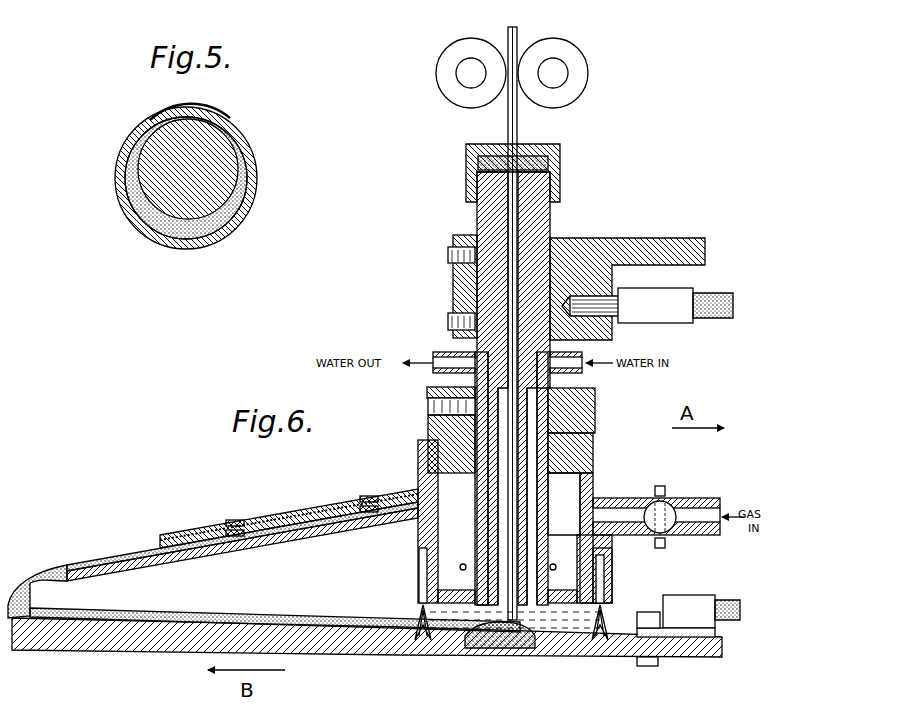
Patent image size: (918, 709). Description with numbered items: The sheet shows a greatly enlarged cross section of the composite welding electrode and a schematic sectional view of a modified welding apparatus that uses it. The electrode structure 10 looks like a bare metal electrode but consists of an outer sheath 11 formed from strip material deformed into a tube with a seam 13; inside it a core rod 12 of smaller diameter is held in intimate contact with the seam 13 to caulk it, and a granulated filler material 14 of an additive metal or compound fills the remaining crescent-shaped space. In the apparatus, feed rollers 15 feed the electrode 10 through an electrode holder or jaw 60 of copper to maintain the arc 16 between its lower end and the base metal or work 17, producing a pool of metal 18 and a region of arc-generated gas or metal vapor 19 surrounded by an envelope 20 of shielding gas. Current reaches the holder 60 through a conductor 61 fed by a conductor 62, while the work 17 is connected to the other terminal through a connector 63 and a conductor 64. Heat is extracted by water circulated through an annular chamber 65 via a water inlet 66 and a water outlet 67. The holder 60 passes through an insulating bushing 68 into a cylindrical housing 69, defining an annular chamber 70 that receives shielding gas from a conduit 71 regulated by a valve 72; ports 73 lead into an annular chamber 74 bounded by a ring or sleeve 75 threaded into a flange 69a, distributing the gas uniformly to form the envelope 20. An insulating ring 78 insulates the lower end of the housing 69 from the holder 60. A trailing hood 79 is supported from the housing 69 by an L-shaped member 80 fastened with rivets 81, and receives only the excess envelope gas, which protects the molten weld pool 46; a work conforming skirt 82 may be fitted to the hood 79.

In FIG. 5, the electrode structure 10 is at (262, 184).
In FIG. 6, the electrode structure 10 is at (518, 128).
In FIG. 5, the outer sheath 11 is at (238, 153).
In FIG. 5, the core rod 12 is at (201, 148).
In FIG. 5, the seam 13 is at (187, 118).
In FIG. 5, the granulated filler material 14 is at (181, 250).
In FIG. 6, the feed rollers 15 is at (440, 72).
In FIG. 6, the arc 16 is at (512, 649).
In FIG. 6, the base metal or work 17 is at (400, 650).
In FIG. 6, the pool of metal 18 is at (492, 650).
In FIG. 6, the arc-generated gas or metal vapor 19 is at (462, 622).
In FIG. 6, the envelope of shielding gas 20 is at (613, 640).
In FIG. 6, the molten weld pool 46 is at (292, 616).
In FIG. 6, the electrode holder or jaw 60 is at (550, 216).
In FIG. 6, the conductor 61 is at (616, 241).
In FIG. 6, the conductor 62 is at (719, 301).
In FIG. 6, the connector 63 is at (691, 601).
In FIG. 6, the conductor 64 is at (736, 604).
In FIG. 6, the annular chamber 65 is at (597, 395).
In FIG. 6, the water inlet 66 is at (583, 357).
In FIG. 6, the water outlet 67 is at (437, 352).
In FIG. 6, the insulating bushing 68 is at (595, 413).
In FIG. 6, the cylindrical housing 69 is at (428, 436).
In FIG. 6, the flange 69a is at (578, 538).
In FIG. 6, the annular chamber 70 is at (582, 486).
In FIG. 6, the conduit 71 is at (632, 498).
In FIG. 6, the valve 72 is at (666, 494).
In FIG. 6, the ports 73 is at (462, 565).
In FIG. 6, the annular chamber 74 is at (605, 572).
In FIG. 6, the ring or sleeve 75 is at (613, 551).
In FIG. 6, the insulating ring 78 is at (428, 593).
In FIG. 6, the trailing hood 79 is at (136, 546).
In FIG. 6, the L-shaped member 80 is at (322, 512).
In FIG. 6, the rivets 81 is at (234, 518).
In FIG. 6, the work conforming skirt 82 is at (50, 567).